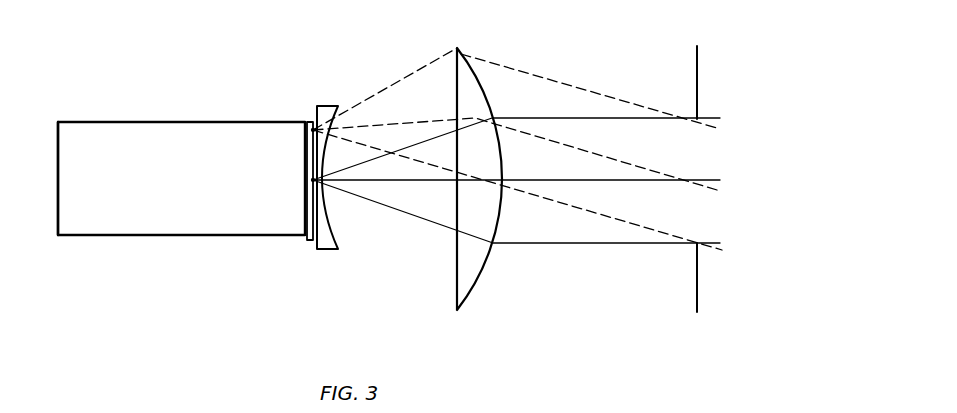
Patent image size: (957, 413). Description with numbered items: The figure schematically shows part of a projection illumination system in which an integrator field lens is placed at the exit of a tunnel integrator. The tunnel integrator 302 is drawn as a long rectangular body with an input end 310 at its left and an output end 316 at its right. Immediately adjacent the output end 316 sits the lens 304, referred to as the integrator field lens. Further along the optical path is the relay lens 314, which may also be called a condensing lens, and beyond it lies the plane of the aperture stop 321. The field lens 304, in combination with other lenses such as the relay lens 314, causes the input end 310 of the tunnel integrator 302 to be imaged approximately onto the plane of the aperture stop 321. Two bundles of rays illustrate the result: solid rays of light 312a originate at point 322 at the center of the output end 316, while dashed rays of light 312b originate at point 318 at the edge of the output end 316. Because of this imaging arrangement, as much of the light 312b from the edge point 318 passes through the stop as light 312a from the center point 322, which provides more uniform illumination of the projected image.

The tunnel integrator 302 is at (239, 237).
The input end 310 is at (56, 213).
The output end 316 is at (307, 240).
The integrator field lens 304 is at (323, 250).
The relay lens 314 is at (456, 300).
The aperture stop 321 is at (697, 291).
The light from center point 312a is at (412, 215).
The light from edge point 312b is at (395, 87).
The point at edge of output end 318 is at (311, 130).
The point at center of output end 322 is at (308, 179).